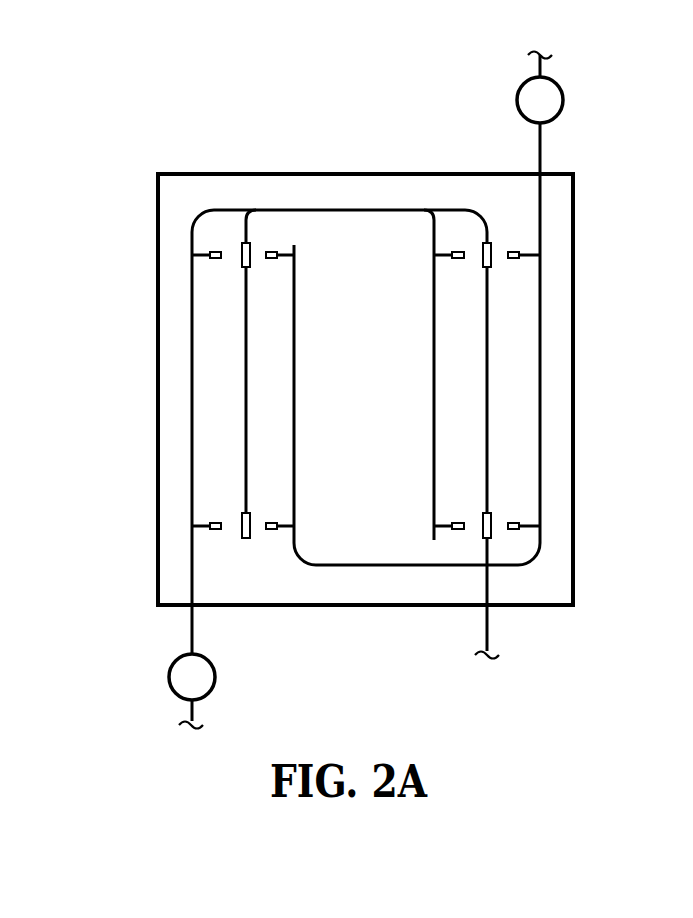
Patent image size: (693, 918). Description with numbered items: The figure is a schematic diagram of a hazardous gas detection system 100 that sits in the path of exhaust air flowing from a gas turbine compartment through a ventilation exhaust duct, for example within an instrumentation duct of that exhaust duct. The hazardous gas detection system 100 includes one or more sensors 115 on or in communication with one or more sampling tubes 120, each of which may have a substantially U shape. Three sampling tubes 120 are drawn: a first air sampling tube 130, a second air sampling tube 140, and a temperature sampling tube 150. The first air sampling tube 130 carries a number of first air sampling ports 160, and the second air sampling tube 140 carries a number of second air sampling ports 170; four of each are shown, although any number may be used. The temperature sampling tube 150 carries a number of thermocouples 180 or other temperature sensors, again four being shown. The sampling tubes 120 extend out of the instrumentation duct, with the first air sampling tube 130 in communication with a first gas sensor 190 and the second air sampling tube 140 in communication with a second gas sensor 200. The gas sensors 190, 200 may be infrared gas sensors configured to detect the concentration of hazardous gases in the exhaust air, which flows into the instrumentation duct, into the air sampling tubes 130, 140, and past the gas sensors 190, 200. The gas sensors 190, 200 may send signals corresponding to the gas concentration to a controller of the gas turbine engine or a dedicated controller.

The hazardous gas detection system 100 is at (137, 110).
The sensors 115 is at (234, 198).
The sampling tubes 120 is at (184, 307).
The first air sampling tube 130 is at (190, 423).
The second air sampling tube 140 is at (296, 389).
The temperature sampling tube 150 is at (247, 368).
The first air sampling ports 160 is at (199, 258).
The second air sampling ports 170 is at (280, 250).
The thermocouples 180 is at (242, 246).
The first gas sensor 190 is at (173, 658).
The second gas sensor 200 is at (564, 100).